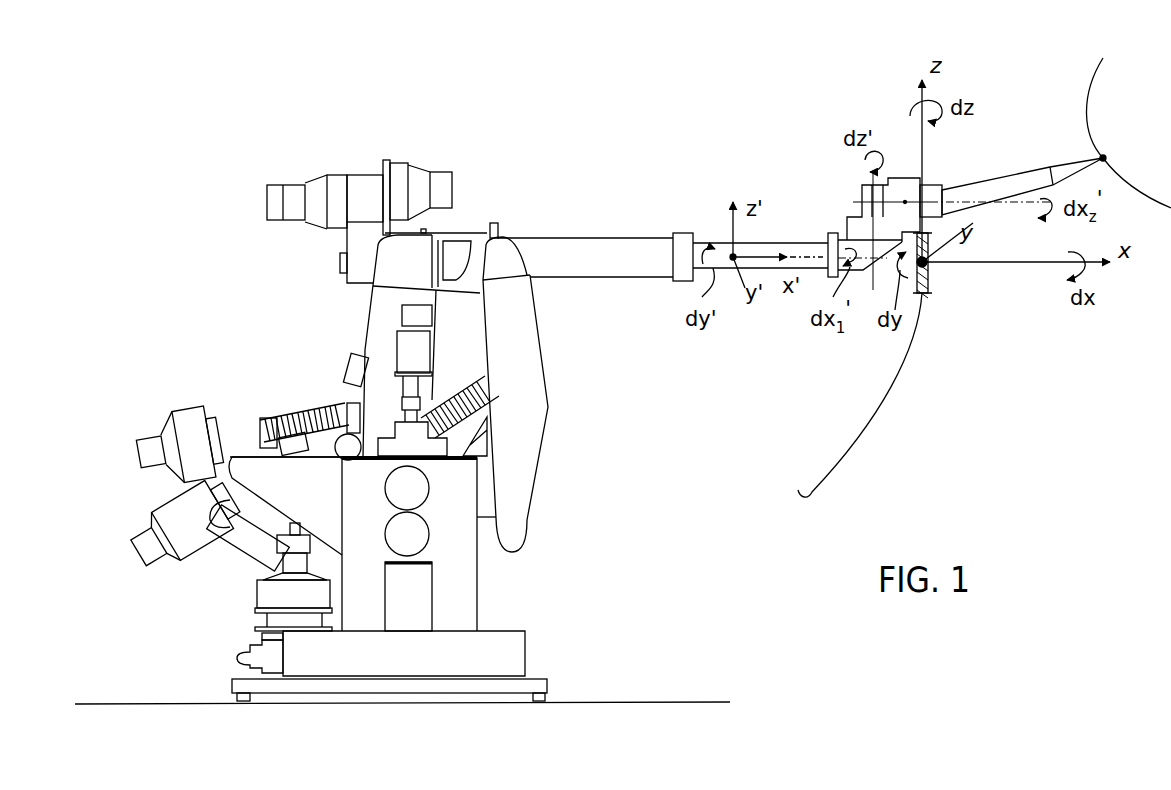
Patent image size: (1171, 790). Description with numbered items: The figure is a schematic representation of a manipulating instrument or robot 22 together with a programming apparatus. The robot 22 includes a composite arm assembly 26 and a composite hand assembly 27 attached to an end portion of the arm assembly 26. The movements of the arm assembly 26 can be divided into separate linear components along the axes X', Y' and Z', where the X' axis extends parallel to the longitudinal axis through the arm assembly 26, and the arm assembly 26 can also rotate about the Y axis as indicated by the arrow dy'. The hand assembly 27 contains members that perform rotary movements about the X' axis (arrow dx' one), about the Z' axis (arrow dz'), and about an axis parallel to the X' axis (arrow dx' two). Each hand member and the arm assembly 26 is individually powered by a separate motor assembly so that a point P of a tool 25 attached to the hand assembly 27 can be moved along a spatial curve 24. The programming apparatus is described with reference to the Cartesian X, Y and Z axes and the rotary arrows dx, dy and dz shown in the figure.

The manipulating instrument or robot 22 is at (547, 366).
The spatial curve 24 is at (1090, 108).
The tool 25 is at (1002, 178).
The composite arm assembly 26 is at (600, 239).
The composite hand assembly 27 is at (830, 222).